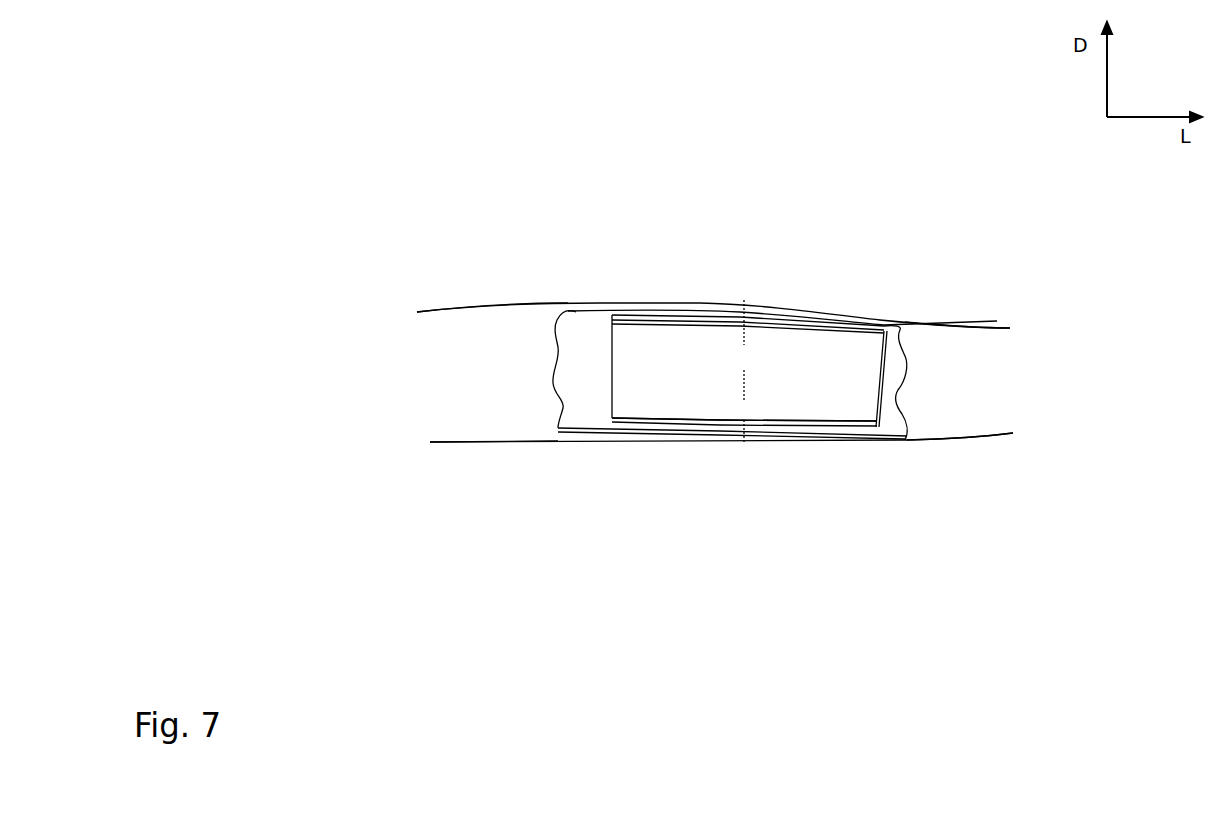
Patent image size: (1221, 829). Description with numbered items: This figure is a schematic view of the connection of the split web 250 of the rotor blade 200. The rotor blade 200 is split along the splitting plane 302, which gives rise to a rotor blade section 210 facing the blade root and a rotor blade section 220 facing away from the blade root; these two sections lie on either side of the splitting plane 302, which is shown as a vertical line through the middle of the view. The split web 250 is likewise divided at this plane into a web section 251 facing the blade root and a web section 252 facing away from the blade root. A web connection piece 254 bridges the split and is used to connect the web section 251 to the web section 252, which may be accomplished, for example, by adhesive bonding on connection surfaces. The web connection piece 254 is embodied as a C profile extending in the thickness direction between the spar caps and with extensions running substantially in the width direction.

The rotor blade 200 is at (323, 122).
The rotor blade section facing the blade root 210 is at (507, 402).
The rotor blade section facing away from the blade root 220 is at (963, 400).
The split web 250 is at (818, 322).
The web section facing the blade root 251 is at (595, 330).
The web section facing away from the blade root 252 is at (893, 360).
The web connection piece 254 is at (798, 400).
The splitting plane 302 is at (745, 343).